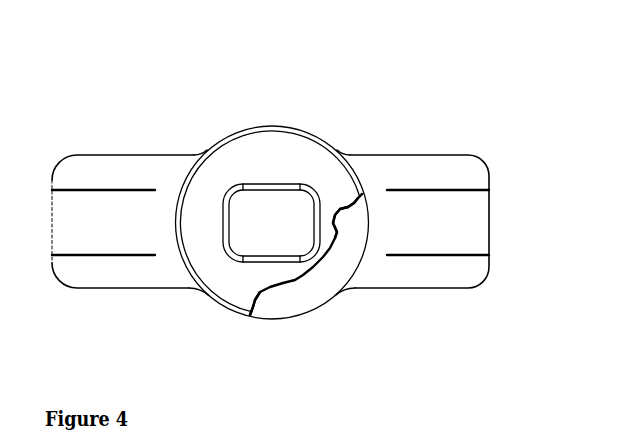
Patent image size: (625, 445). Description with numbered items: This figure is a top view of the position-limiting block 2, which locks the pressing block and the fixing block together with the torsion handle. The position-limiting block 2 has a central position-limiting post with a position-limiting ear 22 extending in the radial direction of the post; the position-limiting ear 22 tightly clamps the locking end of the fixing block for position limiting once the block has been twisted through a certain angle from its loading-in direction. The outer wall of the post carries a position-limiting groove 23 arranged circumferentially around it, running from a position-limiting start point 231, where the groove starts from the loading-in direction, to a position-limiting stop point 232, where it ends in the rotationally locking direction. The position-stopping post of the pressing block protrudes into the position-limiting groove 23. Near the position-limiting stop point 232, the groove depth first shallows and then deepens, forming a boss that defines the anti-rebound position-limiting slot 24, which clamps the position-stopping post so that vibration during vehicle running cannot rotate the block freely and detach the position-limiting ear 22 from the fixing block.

The position-limiting block 2 is at (268, 134).
The position-limiting ear 22 is at (105, 158).
The position-limiting groove 23 is at (311, 291).
The position-limiting start point 231 is at (260, 319).
The position-limiting stop point 232 is at (371, 185).
The anti-rebound position-limiting slot 24 is at (352, 231).